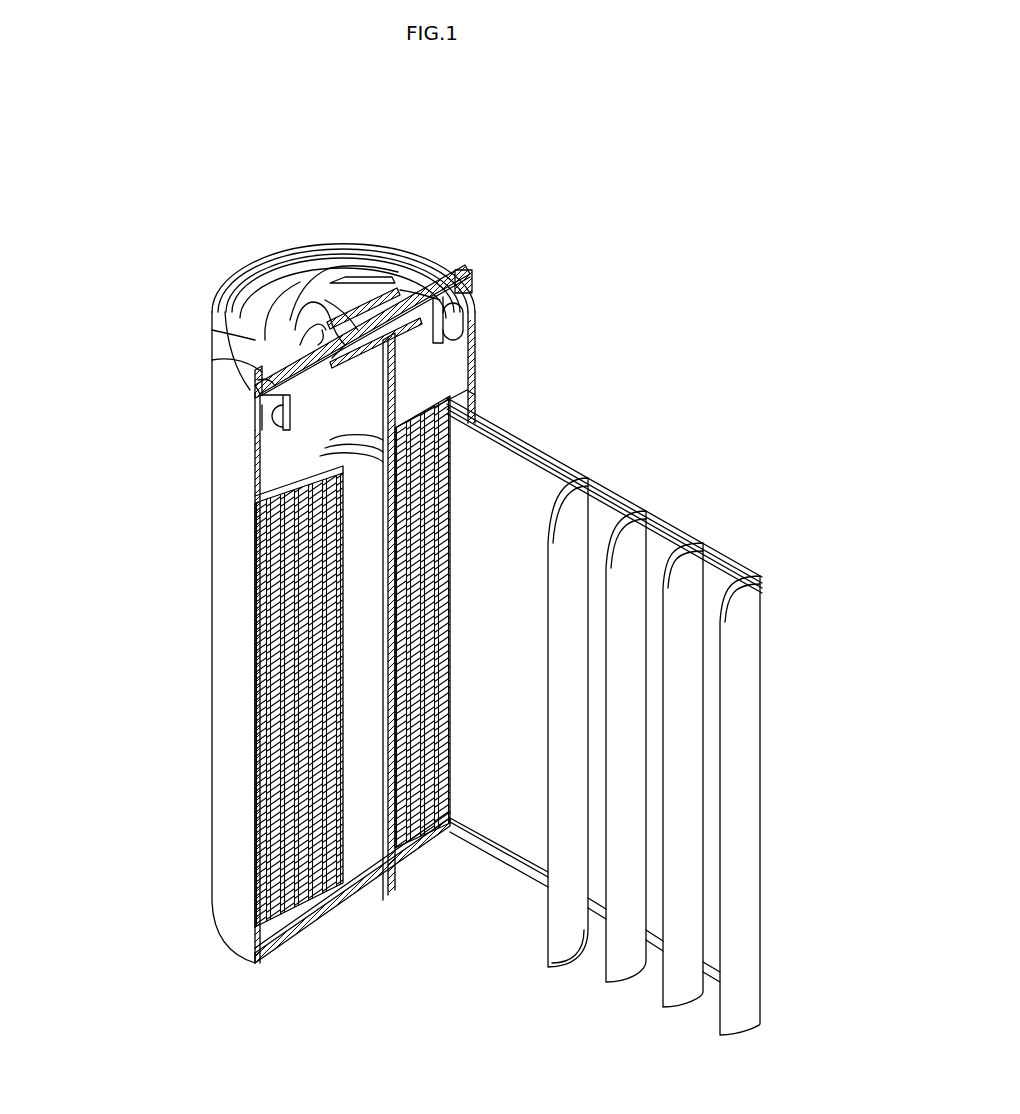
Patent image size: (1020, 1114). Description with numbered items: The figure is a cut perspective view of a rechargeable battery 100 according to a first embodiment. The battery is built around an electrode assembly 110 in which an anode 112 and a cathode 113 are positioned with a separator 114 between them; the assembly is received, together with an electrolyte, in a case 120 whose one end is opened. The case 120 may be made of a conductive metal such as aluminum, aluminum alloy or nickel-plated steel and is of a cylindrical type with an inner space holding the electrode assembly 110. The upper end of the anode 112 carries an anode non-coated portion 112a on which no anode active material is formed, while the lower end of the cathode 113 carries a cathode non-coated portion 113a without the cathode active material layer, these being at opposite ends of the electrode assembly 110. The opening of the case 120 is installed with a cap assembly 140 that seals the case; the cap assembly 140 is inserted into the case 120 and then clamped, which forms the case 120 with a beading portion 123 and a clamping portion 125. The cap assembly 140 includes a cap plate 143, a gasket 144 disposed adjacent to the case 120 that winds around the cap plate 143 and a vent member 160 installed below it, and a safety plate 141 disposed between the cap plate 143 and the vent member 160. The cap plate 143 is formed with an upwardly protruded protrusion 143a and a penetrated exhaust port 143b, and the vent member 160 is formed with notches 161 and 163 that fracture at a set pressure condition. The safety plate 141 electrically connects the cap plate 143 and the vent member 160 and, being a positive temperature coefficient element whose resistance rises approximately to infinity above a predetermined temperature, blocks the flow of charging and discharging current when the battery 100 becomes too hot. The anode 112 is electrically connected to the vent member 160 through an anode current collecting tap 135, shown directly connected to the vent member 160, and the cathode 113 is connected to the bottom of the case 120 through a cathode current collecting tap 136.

The rechargeable battery 100 is at (390, 131).
The electrode assembly 110 is at (418, 852).
The anode 112 is at (680, 1002).
The anode non-coated portion 112a is at (675, 523).
The cathode 113 is at (548, 944).
The cathode non-coated portion 113a is at (560, 968).
The separator 114 is at (625, 985).
The case 120 is at (215, 557).
The beading portion 123 is at (272, 416).
The clamping portion 125 is at (262, 395).
The anode current collecting tap 135 is at (398, 372).
The cathode current collecting tap 136 is at (362, 905).
The cap assembly 140 is at (374, 317).
The safety plate 141 is at (452, 280).
The cap plate 143 is at (443, 258).
The protrusion 143a is at (325, 278).
The exhaust port 143b is at (300, 335).
The gasket 144 is at (344, 350).
The vent member 160 is at (460, 287).
The notch 161 is at (408, 290).
The notch 163 is at (345, 300).